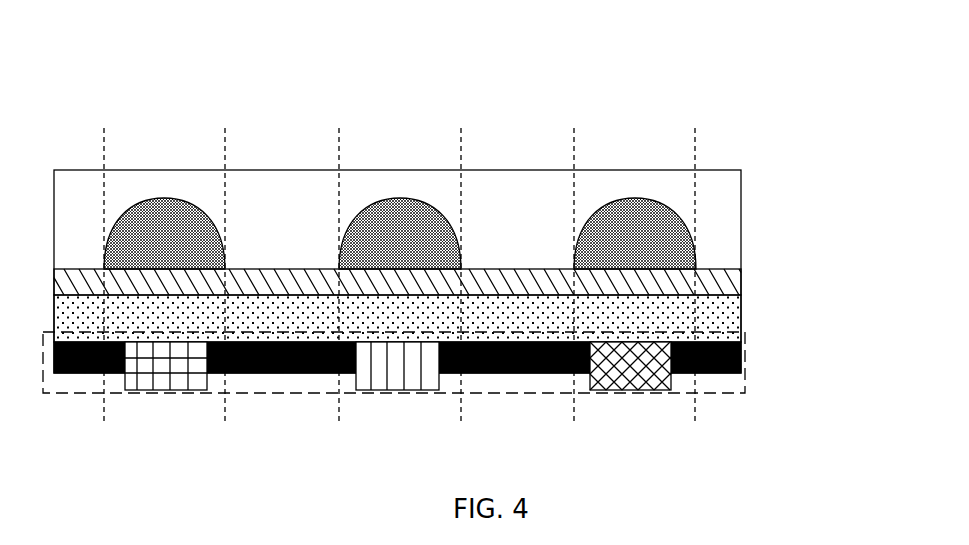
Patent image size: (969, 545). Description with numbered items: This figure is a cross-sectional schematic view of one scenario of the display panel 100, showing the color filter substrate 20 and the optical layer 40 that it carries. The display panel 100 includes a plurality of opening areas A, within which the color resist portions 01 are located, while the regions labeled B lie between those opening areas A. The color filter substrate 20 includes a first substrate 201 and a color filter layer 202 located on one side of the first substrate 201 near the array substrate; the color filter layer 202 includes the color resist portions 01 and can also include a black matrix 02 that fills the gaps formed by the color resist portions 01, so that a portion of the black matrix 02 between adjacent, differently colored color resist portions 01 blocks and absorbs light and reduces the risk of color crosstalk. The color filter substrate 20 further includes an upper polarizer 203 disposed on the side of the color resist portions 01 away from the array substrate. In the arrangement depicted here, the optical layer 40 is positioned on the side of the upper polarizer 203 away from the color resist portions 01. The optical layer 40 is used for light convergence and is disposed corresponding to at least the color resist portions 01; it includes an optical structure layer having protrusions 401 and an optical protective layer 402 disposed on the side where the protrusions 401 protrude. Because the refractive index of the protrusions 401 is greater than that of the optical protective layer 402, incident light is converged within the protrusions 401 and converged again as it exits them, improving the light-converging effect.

The display panel 100 is at (414, 39).
The opening areas A is at (153, 153).
The non-light-emitting region B is at (265, 148).
The color filter substrate 20 is at (476, 314).
The first substrate 201 is at (723, 320).
The color filter layer 202 is at (451, 362).
The upper polarizer 203 is at (725, 292).
The optical layer 40 is at (479, 233).
The protrusions 401 is at (692, 248).
The optical protective layer 402 is at (678, 210).
The color resist portions 01 is at (392, 367).
The black matrix 02 is at (275, 373).